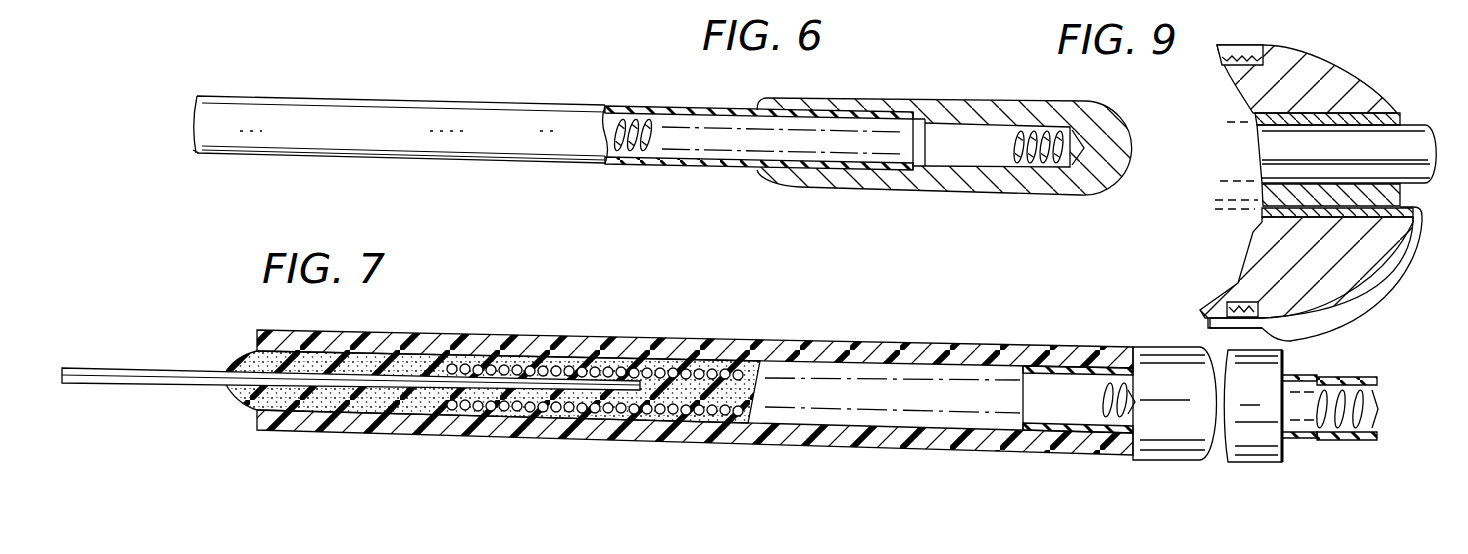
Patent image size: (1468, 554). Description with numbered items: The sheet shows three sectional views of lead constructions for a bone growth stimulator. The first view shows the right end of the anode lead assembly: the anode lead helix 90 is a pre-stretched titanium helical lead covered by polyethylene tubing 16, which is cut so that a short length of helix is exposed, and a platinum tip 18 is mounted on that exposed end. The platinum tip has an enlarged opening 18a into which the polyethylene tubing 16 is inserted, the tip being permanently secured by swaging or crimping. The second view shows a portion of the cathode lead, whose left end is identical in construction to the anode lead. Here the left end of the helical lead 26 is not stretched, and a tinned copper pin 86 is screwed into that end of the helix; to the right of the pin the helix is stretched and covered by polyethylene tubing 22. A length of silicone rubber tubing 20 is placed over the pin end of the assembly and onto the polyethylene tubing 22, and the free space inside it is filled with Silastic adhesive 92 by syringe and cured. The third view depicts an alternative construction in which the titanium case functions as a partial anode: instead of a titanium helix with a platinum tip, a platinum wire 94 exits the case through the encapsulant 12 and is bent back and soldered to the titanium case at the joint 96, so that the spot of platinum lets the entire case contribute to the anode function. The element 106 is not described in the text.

In FIG. 6, the polyethylene tubing 16 is at (494, 108).
In FIG. 6, the platinum tip 18 is at (1019, 104).
In FIG. 6, the enlarged opening 18a is at (879, 113).
In FIG. 6, the anode lead helix 90 is at (625, 118).
In FIG. 7, the silicone rubber tubing 20 is at (463, 347).
In FIG. 9, the silicone rubber tubing 20 is at (1418, 137).
In FIG. 7, the polyethylene tubing 22 is at (1070, 366).
In FIG. 7, the helical lead 26 is at (587, 368).
In FIG. 7, the copper pin 86 is at (173, 375).
In FIG. 7, the Silastic adhesive 92 is at (256, 350).
In FIG. 9, the solder joint 96 is at (1222, 334).
In FIG. 9, the bone section 106 is at (1327, 73).
In FIG. 9, the encapsulant 12 is at (1400, 194).
In FIG. 9, the platinum wire 94 is at (1414, 230).